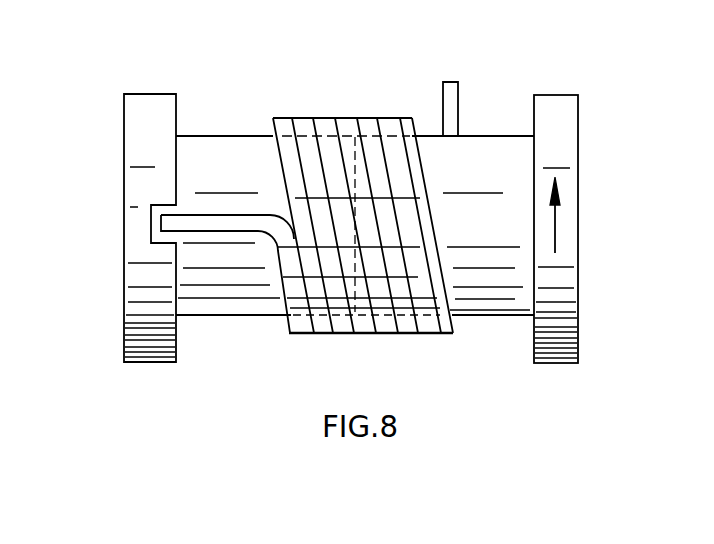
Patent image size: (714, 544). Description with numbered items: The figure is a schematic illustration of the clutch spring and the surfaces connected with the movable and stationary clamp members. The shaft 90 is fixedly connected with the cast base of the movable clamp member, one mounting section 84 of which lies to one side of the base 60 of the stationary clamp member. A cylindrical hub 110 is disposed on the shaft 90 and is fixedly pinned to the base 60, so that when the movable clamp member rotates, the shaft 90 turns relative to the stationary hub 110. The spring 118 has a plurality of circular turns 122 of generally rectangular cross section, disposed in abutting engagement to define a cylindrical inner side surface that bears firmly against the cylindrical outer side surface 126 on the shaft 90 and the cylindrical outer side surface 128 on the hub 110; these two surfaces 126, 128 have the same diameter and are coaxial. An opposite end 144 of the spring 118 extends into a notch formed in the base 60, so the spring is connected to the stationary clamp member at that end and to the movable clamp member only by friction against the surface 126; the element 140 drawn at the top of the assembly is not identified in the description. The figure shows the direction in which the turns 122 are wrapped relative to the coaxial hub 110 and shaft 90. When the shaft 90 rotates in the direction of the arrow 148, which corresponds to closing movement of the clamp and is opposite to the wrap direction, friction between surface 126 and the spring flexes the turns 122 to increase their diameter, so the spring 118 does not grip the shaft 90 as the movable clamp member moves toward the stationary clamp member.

The base 60 is at (152, 140).
The mounting section 84 is at (560, 332).
The shaft 90 is at (483, 316).
The hub 110 is at (225, 315).
The spring 118 is at (363, 196).
The turns 122 is at (386, 123).
The cylindrical outer side surface 126 is at (487, 145).
The cylindrical outer side surface 128 is at (228, 152).
The vent 140 is at (449, 92).
The opposite end 144 is at (172, 220).
The arrow 148 is at (553, 220).